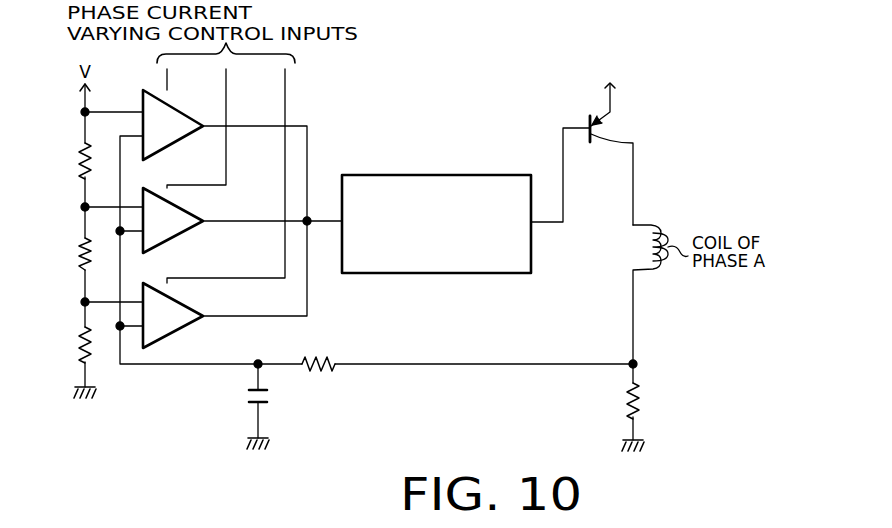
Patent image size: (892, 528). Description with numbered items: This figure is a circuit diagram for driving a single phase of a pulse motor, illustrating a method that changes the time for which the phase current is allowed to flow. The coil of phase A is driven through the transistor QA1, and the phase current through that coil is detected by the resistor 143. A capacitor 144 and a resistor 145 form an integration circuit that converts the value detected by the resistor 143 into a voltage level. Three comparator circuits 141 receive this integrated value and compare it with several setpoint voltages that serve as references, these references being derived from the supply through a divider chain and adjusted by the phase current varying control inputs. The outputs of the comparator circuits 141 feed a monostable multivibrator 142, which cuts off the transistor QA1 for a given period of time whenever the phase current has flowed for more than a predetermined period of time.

The comparator circuits 141 is at (184, 141).
The monostable multivibrator 142 is at (433, 177).
The resistor 143 is at (641, 397).
The capacitor 144 is at (270, 395).
The resistor 145 is at (330, 358).
The transistor QA1 is at (621, 143).